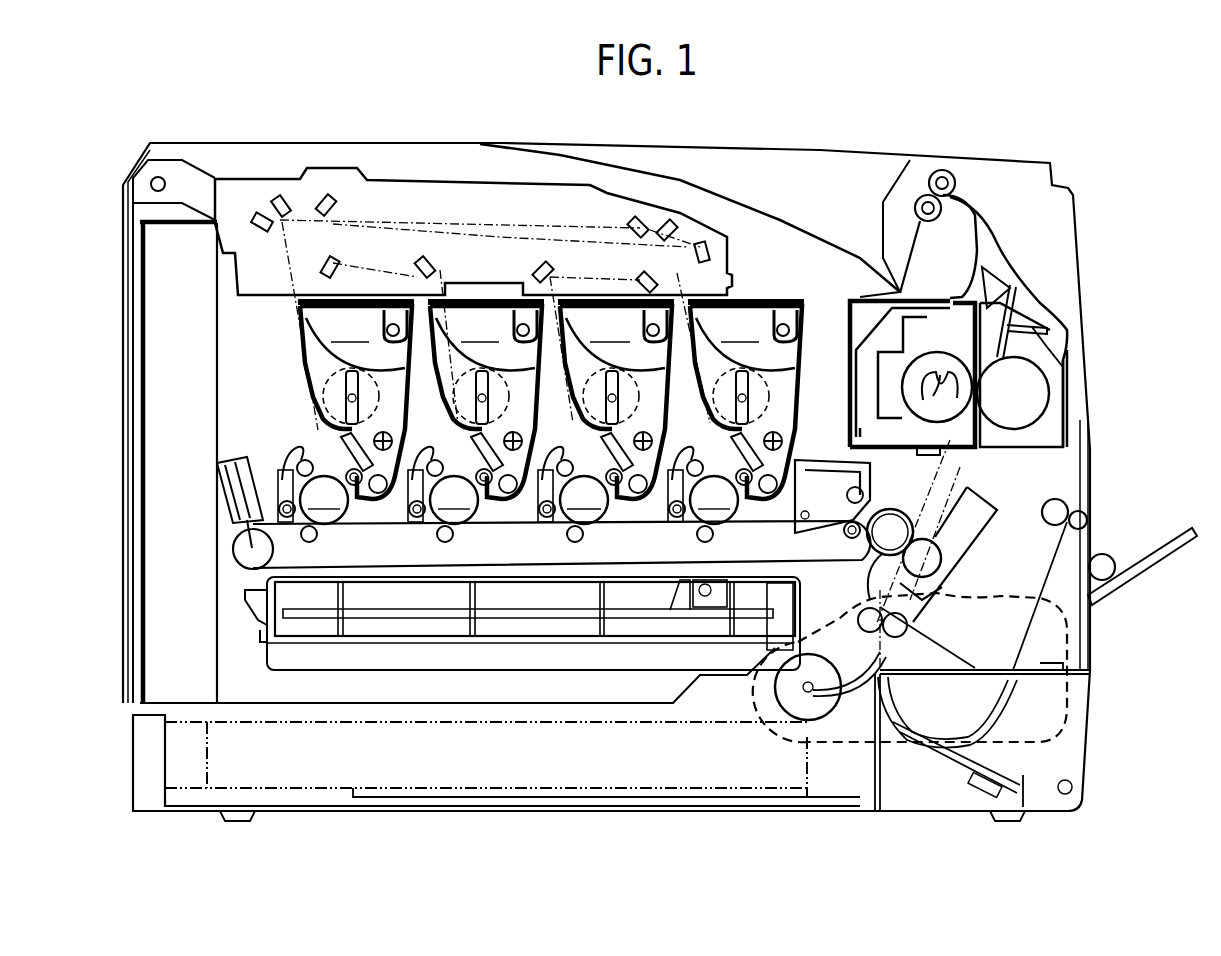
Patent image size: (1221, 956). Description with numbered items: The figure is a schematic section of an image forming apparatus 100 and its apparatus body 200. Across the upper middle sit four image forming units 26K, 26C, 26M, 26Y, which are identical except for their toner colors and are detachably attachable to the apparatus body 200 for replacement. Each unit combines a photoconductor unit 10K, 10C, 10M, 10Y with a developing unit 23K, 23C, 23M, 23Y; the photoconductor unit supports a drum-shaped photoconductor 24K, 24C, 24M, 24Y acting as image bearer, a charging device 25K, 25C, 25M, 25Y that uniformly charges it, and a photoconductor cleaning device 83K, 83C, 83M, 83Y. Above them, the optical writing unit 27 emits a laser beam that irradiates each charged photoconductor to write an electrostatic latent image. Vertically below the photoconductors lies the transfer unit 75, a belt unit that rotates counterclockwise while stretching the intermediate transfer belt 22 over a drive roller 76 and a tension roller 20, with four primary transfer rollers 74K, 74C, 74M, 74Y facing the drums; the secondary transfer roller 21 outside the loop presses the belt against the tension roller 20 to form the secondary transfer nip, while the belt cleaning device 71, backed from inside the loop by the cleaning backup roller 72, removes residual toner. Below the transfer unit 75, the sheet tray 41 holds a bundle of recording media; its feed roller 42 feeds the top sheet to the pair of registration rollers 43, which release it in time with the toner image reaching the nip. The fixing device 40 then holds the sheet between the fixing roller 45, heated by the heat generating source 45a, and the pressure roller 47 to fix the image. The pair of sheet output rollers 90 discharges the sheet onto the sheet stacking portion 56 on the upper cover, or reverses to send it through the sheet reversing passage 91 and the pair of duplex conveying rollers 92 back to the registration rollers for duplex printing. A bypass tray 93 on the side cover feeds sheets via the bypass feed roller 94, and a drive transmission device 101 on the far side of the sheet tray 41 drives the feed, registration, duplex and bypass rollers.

The image forming apparatus 100 is at (914, 110).
The photoconductor unit 10K is at (297, 449).
The photoconductor unit 10C is at (400, 300).
The photoconductor unit 10M is at (522, 318).
The photoconductor unit 10Y is at (653, 317).
The tension roller 20 is at (892, 512).
The secondary transfer roller 21 is at (940, 560).
The intermediate transfer belt 22 is at (400, 526).
The developing unit 23K is at (356, 367).
The developing unit 23C is at (486, 367).
The developing unit 23M is at (616, 367).
The developing unit 23Y is at (746, 367).
The drum-shaped photoconductor 24K is at (324, 500).
The drum-shaped photoconductor 24C is at (454, 500).
The drum-shaped photoconductor 24M is at (584, 500).
The drum-shaped photoconductor 24Y is at (714, 500).
The charging device 25K is at (303, 462).
The charging device 25C is at (485, 498).
The charging device 25M is at (620, 500).
The charging device 25Y is at (755, 500).
The image forming unit 26K is at (303, 392).
The image forming unit 26C is at (428, 380).
The image forming unit 26M is at (558, 420).
The image forming unit 26Y is at (687, 397).
The optical writing unit 27 is at (466, 183).
The fixing device 40 is at (846, 305).
The sheet tray 41 is at (815, 796).
The feed roller 42 is at (764, 692).
The pair of registration rollers 43 is at (866, 634).
The fixing roller 45 is at (958, 403).
The heat generating source 45a is at (940, 378).
The pressure roller 47 is at (1048, 416).
The sheet stacking portion 56 is at (798, 228).
The belt cleaning device 71 is at (837, 457).
The cleaning backup roller 72 is at (852, 540).
The primary transfer roller 74K is at (312, 541).
The primary transfer roller 74C is at (451, 540).
The primary transfer roller 74M is at (582, 541).
The primary transfer roller 74Y is at (713, 540).
The transfer unit 75 is at (228, 572).
The drive roller 76 is at (268, 550).
The photoconductor cleaning device 83K is at (420, 264).
The photoconductor cleaning device 83C is at (393, 495).
The photoconductor cleaning device 83M is at (557, 520).
The photoconductor cleaning device 83Y is at (642, 286).
The pair of sheet output rollers 90 is at (950, 190).
The sheet reversing passage 91 is at (1088, 480).
The pair of duplex conveying rollers 92 is at (1046, 506).
The bypass tray 93 is at (1162, 570).
The bypass feed roller 94 is at (1104, 554).
The drive transmission device 101 is at (1072, 646).
The apparatus body 200 is at (1085, 393).